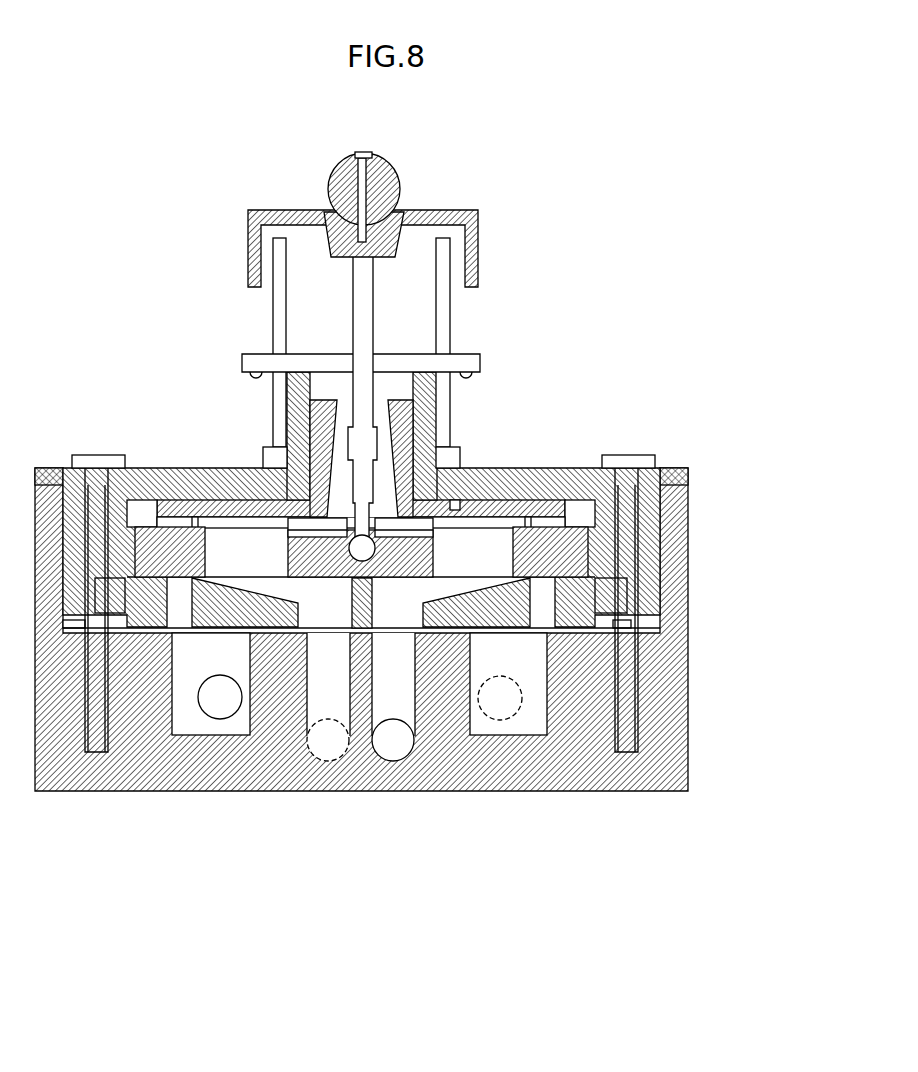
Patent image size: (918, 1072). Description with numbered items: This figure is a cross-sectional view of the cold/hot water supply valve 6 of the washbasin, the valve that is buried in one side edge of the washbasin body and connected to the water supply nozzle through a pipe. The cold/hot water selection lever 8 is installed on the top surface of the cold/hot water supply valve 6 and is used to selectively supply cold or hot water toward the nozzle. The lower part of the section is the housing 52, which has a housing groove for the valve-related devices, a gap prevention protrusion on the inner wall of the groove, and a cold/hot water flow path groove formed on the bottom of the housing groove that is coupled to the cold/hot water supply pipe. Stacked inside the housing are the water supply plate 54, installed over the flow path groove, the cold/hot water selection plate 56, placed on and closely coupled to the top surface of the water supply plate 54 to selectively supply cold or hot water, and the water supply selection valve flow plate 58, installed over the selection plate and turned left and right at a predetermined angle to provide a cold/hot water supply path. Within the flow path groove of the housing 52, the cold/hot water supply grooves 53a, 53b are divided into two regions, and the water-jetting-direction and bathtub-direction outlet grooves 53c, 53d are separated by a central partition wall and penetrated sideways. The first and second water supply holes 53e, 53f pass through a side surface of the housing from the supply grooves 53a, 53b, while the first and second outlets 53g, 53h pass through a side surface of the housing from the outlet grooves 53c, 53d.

The cold/hot water supply valve 6 is at (142, 357).
The cold/hot water selection lever 8 is at (380, 171).
The housing 52 is at (655, 767).
The water supply plate 54 is at (616, 611).
The cold/hot water selection plate 56 is at (583, 548).
The water supply selection valve flow plate 58 is at (481, 527).
The cold/hot water supply groove 53a is at (175, 722).
The cold/hot water supply groove 53b is at (535, 727).
The water-jetting-direction outlet groove 53c is at (313, 693).
The bathtub-direction outlet groove 53d is at (405, 697).
The first water supply hole 53e is at (220, 710).
The second water supply hole 53f is at (503, 713).
The first outlet 53g is at (340, 757).
The second outlet 53h is at (393, 757).